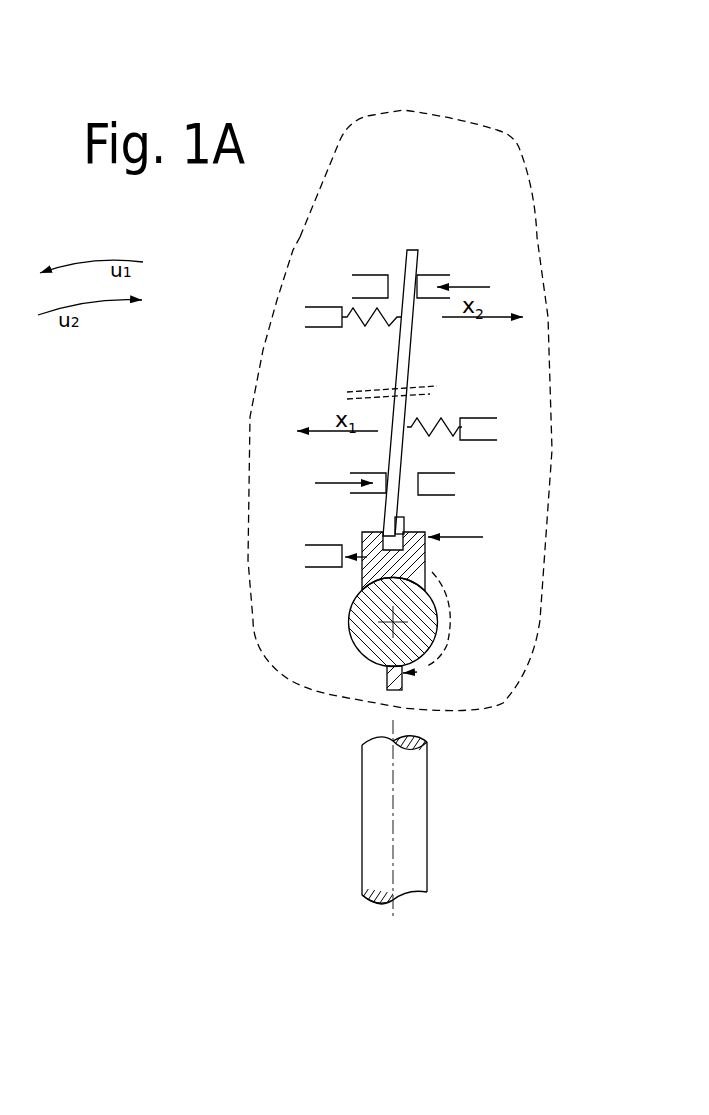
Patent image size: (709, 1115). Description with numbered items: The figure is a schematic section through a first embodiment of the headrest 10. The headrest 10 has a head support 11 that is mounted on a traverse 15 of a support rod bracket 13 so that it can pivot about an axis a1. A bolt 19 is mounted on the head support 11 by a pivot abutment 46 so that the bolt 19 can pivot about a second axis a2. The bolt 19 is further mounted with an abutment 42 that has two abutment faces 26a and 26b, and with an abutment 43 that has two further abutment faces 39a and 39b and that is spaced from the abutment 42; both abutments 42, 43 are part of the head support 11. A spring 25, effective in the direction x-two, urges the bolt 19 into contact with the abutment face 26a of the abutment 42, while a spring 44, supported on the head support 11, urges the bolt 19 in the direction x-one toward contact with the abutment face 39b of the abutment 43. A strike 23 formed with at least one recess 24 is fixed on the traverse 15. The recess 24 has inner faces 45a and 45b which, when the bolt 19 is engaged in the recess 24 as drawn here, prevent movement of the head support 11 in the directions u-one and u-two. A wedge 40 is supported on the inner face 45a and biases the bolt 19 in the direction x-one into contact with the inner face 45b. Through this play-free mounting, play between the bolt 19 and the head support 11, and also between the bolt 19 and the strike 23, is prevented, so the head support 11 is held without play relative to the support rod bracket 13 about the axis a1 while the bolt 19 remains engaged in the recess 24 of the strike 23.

The headrest 10 is at (580, 116).
The head support 11 is at (480, 163).
The support rod bracket 13 is at (377, 643).
The traverse 15 is at (352, 638).
The bolt 19 is at (403, 357).
The strike 23 is at (363, 580).
The recess 24 is at (380, 553).
The spring 25 is at (383, 320).
The abutment face 26a is at (418, 265).
The abutment face 26b is at (395, 283).
The abutment face 39a is at (420, 480).
The abutment face 39b is at (387, 500).
The wedge 40 is at (407, 523).
The abutment 42 is at (352, 283).
The abutment 43 is at (350, 467).
The spring 44 is at (432, 427).
The inner face 45a is at (427, 568).
The inner face 45b is at (387, 525).
The pivot abutment 46 is at (352, 398).
The axis a1 is at (423, 643).
The axis a2 is at (368, 387).